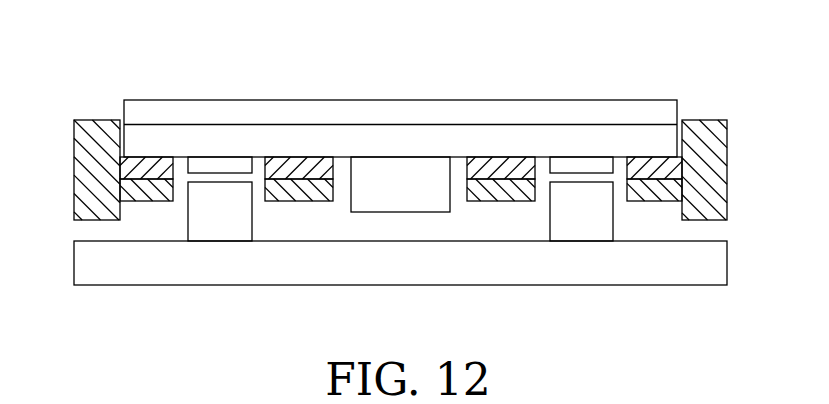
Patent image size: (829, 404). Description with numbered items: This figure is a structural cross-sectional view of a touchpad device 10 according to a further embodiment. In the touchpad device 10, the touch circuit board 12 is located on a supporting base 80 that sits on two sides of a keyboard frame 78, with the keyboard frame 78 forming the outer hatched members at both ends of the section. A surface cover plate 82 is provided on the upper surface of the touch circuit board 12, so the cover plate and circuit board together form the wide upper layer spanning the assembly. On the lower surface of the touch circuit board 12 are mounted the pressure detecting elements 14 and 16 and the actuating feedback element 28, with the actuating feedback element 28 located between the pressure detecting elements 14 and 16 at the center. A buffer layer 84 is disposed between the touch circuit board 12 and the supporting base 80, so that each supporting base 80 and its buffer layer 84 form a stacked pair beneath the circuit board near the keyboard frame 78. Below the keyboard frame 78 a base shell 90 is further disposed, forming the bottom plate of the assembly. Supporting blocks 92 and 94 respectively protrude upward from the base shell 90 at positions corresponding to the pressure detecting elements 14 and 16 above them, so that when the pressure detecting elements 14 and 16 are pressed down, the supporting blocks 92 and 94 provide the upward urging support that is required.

The touchpad device 10 is at (62, 87).
The touch circuit board 12 is at (422, 140).
The pressure detecting element 14 is at (223, 166).
The pressure detecting element 16 is at (580, 166).
The actuating feedback element 28 is at (400, 198).
The keyboard frame 78 is at (91, 118).
The supporting base 80 is at (150, 195).
The surface cover plate 82 is at (367, 112).
The buffer layer 84 is at (142, 166).
The base shell 90 is at (460, 268).
The supporting block 92 is at (222, 228).
The supporting block 94 is at (583, 228).